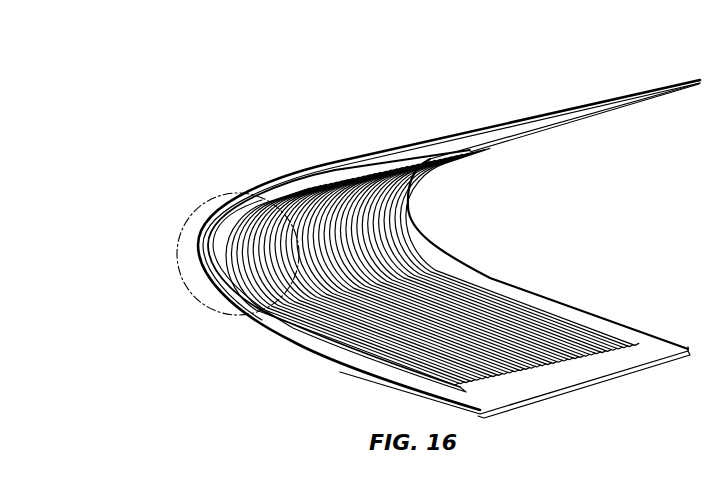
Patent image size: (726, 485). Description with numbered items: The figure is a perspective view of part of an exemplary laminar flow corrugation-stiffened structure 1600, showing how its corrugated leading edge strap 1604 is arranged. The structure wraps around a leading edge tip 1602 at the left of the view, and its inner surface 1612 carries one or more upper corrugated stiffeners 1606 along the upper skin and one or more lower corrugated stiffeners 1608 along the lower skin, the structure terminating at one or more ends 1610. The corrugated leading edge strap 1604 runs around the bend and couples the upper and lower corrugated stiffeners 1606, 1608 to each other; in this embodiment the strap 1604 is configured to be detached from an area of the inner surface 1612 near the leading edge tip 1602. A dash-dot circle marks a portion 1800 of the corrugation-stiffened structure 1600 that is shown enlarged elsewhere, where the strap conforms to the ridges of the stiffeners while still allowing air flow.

The corrugation-stiffened structure 1600 is at (288, 115).
The leading edge tip 1602 is at (201, 227).
The corrugated leading edge strap 1604 is at (260, 200).
The upper corrugated stiffeners 1606 is at (348, 168).
The lower corrugated stiffeners 1608 is at (404, 326).
The ends 1610 is at (423, 393).
The inner surface 1612 is at (208, 252).
The portion 1800 is at (186, 291).